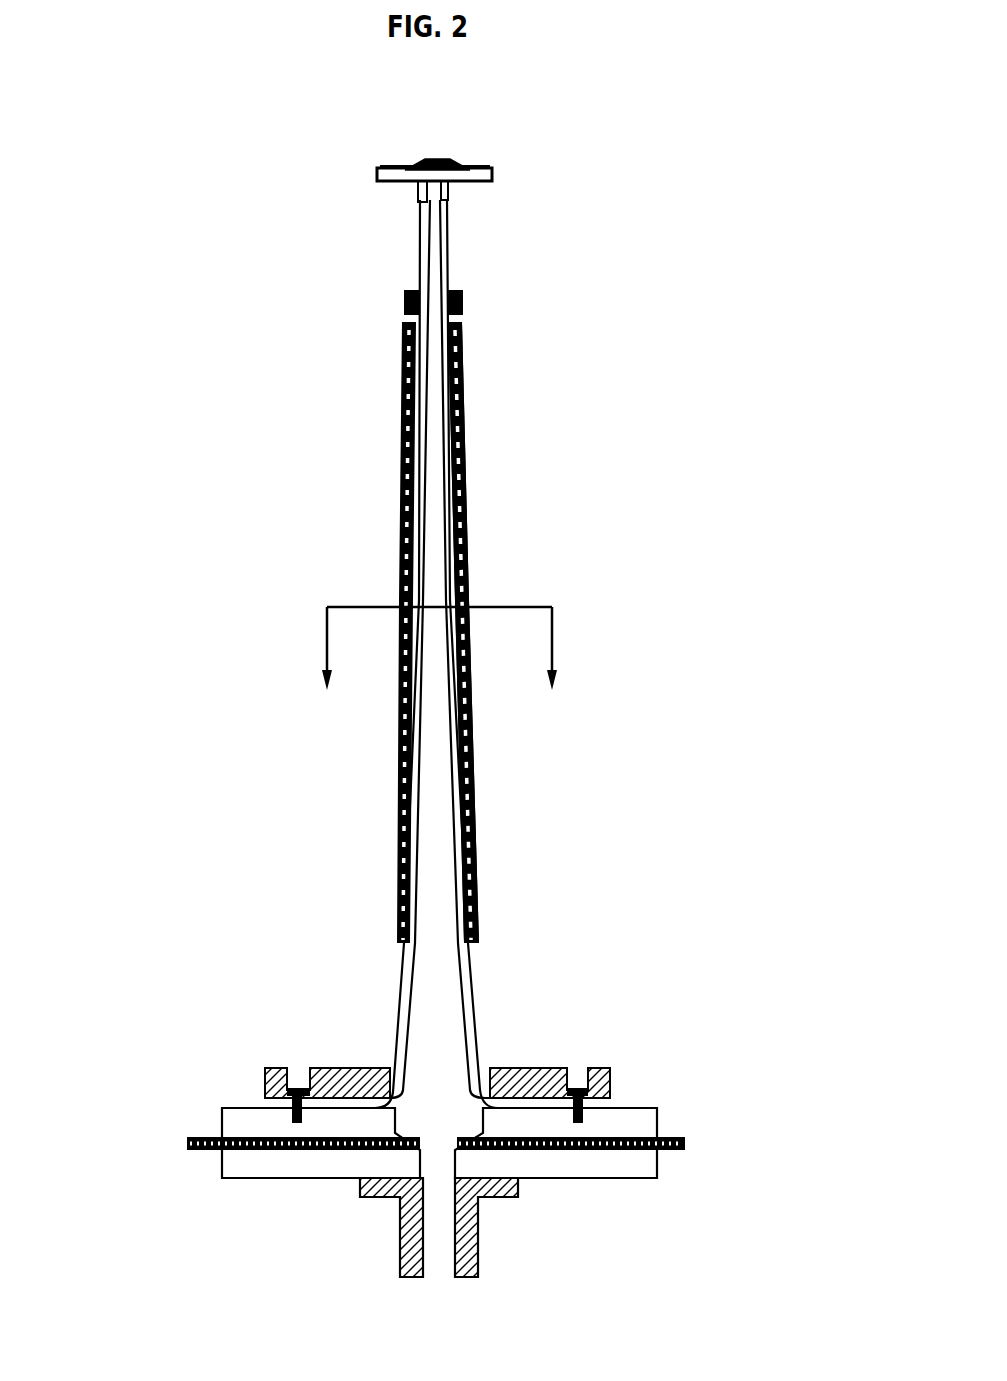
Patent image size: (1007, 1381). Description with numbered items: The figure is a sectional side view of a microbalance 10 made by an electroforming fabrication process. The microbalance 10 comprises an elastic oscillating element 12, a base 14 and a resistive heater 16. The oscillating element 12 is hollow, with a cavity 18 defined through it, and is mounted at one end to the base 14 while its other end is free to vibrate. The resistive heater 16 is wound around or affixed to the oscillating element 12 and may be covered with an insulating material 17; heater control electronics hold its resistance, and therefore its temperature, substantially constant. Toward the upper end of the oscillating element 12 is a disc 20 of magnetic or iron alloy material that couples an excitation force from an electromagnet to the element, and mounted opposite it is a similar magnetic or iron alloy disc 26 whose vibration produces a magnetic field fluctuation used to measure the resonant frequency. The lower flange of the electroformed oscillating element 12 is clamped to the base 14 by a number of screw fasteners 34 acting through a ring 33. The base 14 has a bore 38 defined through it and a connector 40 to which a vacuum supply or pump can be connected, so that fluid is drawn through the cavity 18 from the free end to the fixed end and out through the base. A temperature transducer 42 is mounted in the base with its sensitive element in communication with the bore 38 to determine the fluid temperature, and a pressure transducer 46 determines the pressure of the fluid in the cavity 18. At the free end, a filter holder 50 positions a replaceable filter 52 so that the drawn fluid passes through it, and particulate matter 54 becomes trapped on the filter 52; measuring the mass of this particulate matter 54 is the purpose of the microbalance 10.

The microbalance 10 is at (295, 538).
The elastic oscillating element 12 is at (423, 237).
The base 14 is at (617, 1180).
The resistive heater 16 is at (470, 405).
The insulating material 17 is at (472, 660).
The cavity 18 is at (438, 815).
The disc 20 is at (473, 282).
The magnetic or iron alloy disc 26 is at (407, 288).
The ring 33 is at (267, 1070).
The screw fasteners 34 is at (297, 1073).
The bore 38 is at (437, 1133).
The connector 40 is at (478, 1250).
The temperature transducer 42 is at (187, 1145).
The pressure transducer 46 is at (690, 1133).
The filter holder 50 is at (503, 164).
The replaceable filter 52 is at (402, 168).
The particulate matter 54 is at (445, 161).